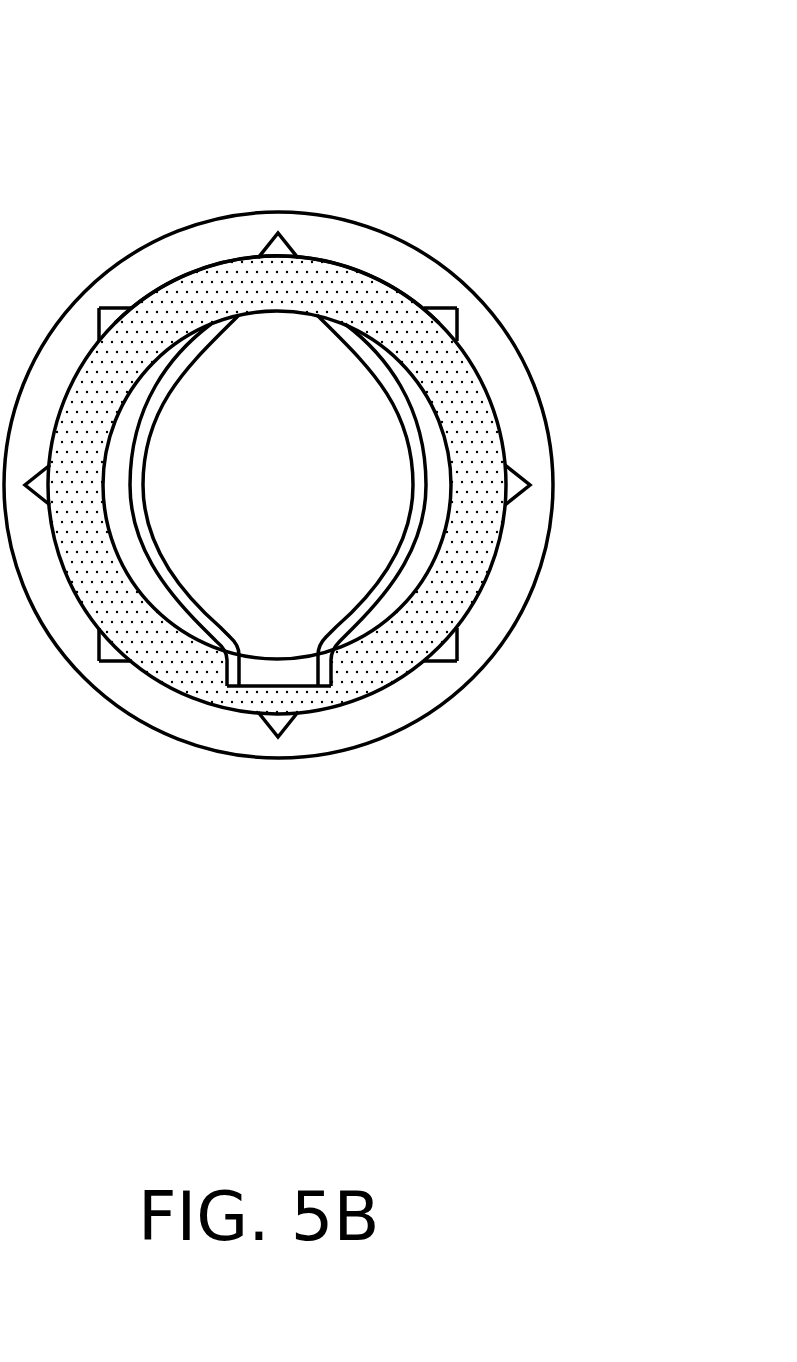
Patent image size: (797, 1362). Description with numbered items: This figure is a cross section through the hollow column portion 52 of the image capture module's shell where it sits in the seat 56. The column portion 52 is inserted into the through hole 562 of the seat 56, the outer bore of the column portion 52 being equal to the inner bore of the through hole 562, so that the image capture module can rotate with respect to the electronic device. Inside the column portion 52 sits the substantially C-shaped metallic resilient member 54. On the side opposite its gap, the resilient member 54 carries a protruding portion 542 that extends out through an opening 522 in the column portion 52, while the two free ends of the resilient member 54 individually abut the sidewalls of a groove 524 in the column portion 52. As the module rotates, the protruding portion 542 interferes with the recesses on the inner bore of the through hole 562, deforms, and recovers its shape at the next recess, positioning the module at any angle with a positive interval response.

The hollow column portion 52 is at (400, 652).
The opening 522 is at (272, 290).
The groove 524 is at (277, 673).
The metallic resilient member 54 is at (416, 441).
The protruding portion 542 is at (280, 233).
The seat 56 is at (388, 253).
The through hole 562 is at (110, 647).